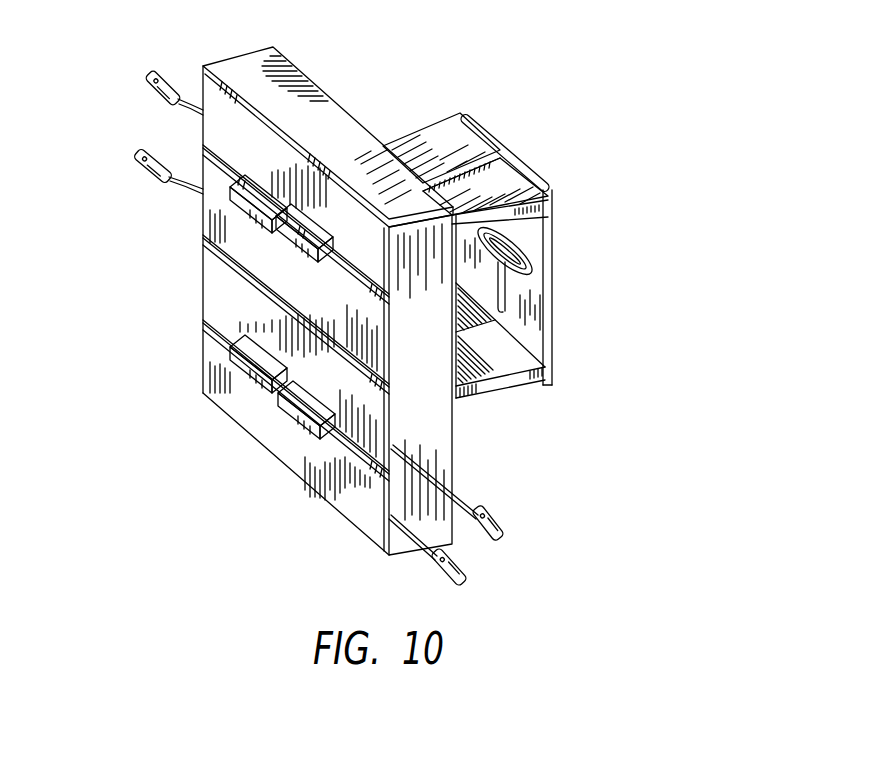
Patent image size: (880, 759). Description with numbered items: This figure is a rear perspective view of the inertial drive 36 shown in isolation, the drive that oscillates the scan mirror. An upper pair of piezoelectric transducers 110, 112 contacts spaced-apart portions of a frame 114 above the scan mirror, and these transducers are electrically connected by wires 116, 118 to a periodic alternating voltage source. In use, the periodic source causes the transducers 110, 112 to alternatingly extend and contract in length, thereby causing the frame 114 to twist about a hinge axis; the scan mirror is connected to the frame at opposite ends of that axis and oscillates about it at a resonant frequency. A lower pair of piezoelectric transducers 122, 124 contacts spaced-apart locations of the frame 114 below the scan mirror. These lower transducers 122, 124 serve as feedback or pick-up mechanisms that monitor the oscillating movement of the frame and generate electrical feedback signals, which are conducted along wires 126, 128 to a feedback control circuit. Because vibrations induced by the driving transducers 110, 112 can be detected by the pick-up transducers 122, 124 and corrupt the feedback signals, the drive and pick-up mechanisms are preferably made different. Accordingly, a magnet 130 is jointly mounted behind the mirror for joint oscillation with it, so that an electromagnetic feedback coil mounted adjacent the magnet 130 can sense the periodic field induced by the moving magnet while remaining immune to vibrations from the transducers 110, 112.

The inertial drive 36 is at (514, 80).
The piezoelectric transducer 110 is at (508, 180).
The piezoelectric transducer 112 is at (440, 135).
The frame 114 is at (528, 238).
The wire 116 is at (166, 68).
The wire 118 is at (143, 153).
The piezoelectric transducer 122 is at (480, 390).
The piezoelectric transducer 124 is at (522, 358).
The wire 126 is at (500, 533).
The wire 128 is at (465, 570).
The magnet 130 is at (496, 360).